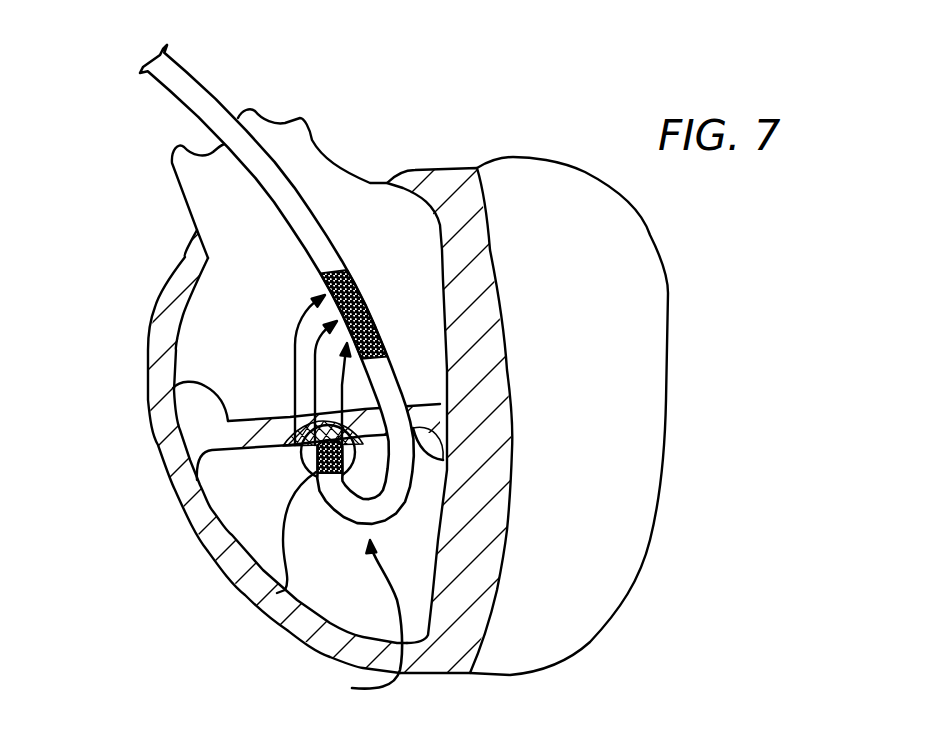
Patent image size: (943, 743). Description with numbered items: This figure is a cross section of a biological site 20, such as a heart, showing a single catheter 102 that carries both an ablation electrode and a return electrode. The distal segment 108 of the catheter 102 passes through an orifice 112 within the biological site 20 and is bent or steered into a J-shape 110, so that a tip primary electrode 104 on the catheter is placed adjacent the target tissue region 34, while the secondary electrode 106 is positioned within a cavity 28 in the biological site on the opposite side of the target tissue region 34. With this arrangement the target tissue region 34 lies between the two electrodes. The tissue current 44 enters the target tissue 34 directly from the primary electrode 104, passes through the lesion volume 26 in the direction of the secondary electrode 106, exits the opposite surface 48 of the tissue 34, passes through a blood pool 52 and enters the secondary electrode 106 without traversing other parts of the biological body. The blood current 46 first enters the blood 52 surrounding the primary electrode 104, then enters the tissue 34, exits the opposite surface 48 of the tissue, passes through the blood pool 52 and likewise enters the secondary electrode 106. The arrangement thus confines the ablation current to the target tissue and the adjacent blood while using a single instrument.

The biological site 20 is at (668, 293).
The lesion volume 26 is at (255, 428).
The cavity 28 is at (190, 317).
The target tissue region 34 is at (263, 450).
The tissue current 44 is at (315, 362).
The blood current 46 is at (293, 340).
The opposite surface 48 is at (173, 389).
The blood pool 52 is at (224, 300).
The catheter 102 is at (224, 112).
The primary electrode 104 is at (277, 593).
The secondary electrode 106 is at (365, 317).
The distal segment 108 is at (358, 620).
The J-shape 110 is at (378, 519).
The orifice 112 is at (443, 460).